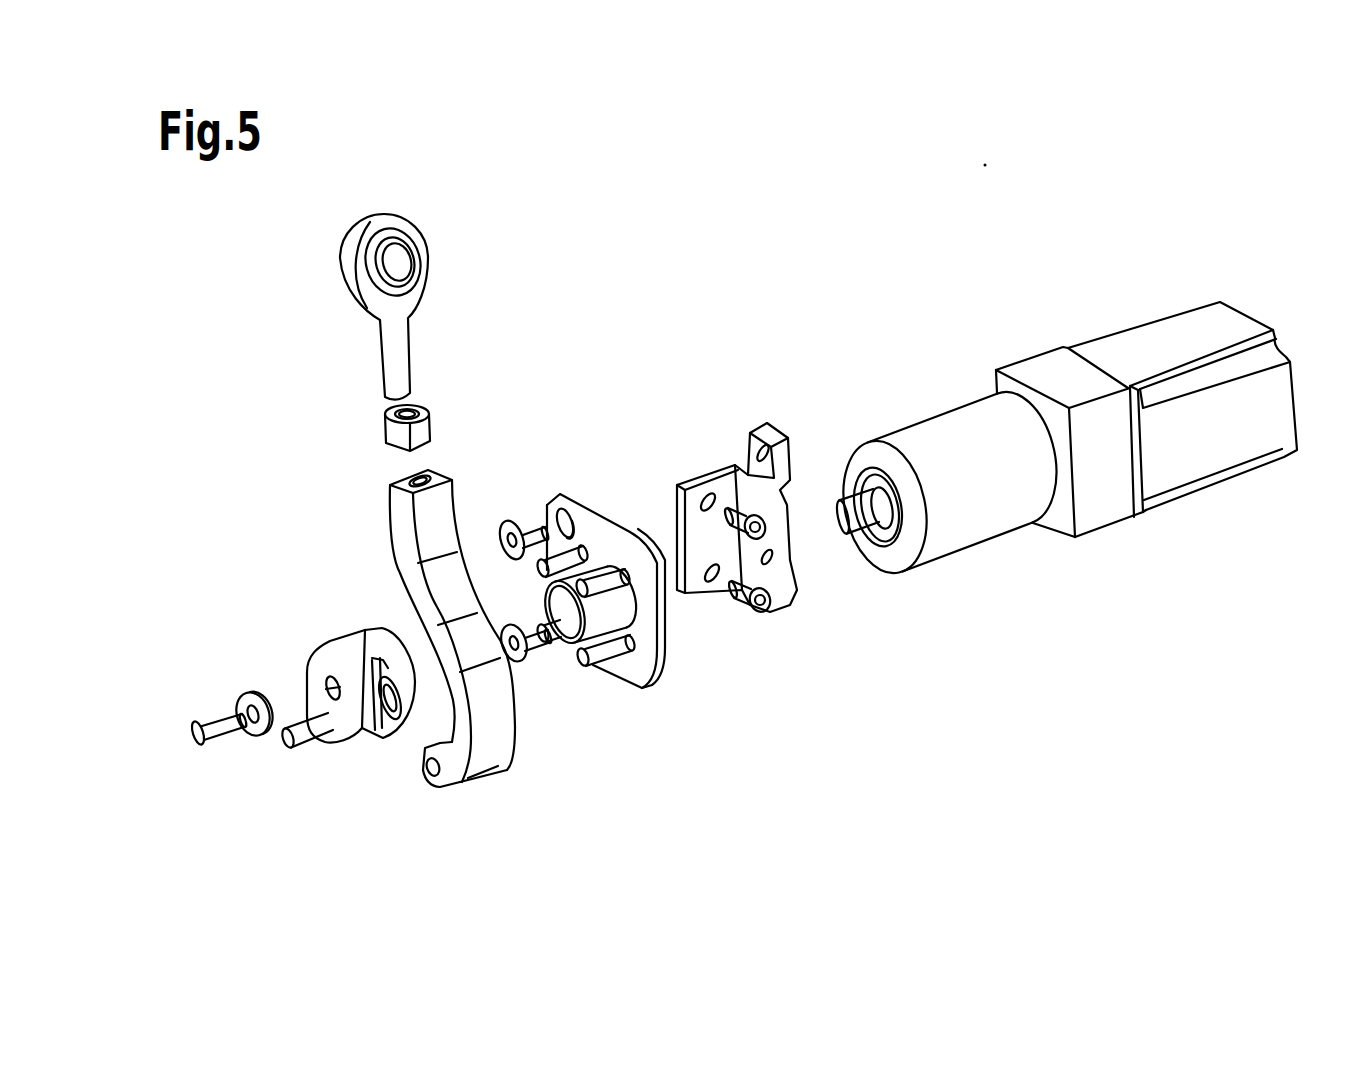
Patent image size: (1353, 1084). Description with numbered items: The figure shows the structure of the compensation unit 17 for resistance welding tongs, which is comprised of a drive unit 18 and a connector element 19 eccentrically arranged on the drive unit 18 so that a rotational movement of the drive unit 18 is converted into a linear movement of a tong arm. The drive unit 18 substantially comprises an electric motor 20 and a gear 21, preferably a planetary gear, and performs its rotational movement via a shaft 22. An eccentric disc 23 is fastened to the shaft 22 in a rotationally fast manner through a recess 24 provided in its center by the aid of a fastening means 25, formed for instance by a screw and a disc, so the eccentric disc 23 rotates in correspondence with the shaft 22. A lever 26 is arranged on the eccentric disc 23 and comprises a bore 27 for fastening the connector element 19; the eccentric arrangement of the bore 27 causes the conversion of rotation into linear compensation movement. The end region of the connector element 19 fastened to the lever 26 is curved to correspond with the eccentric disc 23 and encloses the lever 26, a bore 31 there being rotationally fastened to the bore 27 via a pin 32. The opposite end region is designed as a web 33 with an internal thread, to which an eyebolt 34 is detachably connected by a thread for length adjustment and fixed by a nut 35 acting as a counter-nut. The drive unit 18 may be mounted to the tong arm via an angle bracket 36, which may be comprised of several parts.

The compensation unit 17 is at (1156, 215).
The drive unit 18 is at (1104, 665).
The connector element 19 is at (485, 487).
The electric motor 20 is at (1182, 445).
The gear 21 is at (957, 452).
The shaft 22 is at (861, 512).
The eccentric disc 23 is at (312, 596).
The recess 24 is at (330, 680).
The fastening means 25 is at (220, 782).
The lever 26 is at (402, 730).
The bore 27 is at (371, 729).
The bore 31 is at (438, 777).
The pin 32 is at (308, 722).
The web 33 is at (400, 530).
The eyebolt 34 is at (480, 277).
The nut 35 is at (397, 438).
The angle bracket 36 is at (706, 739).